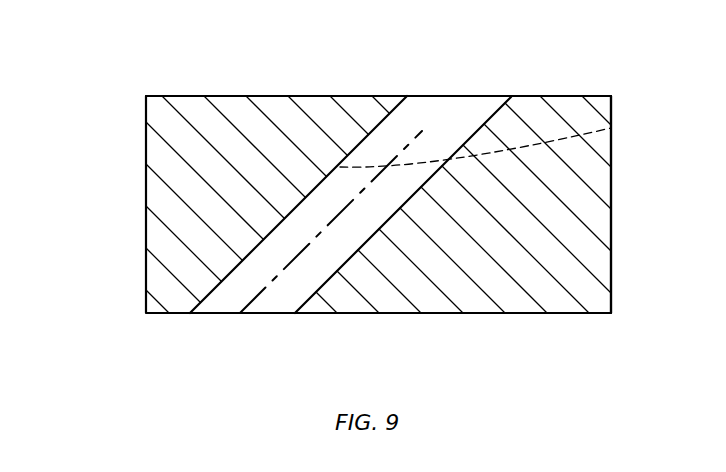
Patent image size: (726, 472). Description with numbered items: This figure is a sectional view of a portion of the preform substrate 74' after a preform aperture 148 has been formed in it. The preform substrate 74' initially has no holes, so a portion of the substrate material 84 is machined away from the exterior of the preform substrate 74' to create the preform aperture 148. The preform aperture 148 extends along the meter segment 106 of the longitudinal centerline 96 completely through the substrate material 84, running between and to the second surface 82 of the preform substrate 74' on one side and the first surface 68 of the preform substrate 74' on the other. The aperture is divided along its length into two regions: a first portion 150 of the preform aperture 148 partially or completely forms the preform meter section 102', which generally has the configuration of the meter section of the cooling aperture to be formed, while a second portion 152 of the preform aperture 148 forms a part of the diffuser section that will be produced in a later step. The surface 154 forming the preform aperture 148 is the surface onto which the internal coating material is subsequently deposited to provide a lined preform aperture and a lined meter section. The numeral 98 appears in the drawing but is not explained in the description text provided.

The preform substrate 74' is at (106, 41).
The second surface 82 is at (232, 96).
The substrate material 84 is at (611, 200).
The first surface 68 is at (158, 313).
The longitudinal centerline 96 is at (432, 125).
The inlet 98 is at (260, 313).
The preform meter section 102' is at (212, 333).
The meter segment 106 is at (362, 243).
The preform aperture 148 is at (418, 122).
The first portion 150 is at (294, 289).
The second portion 152 is at (382, 157).
The surface 154 is at (423, 196).